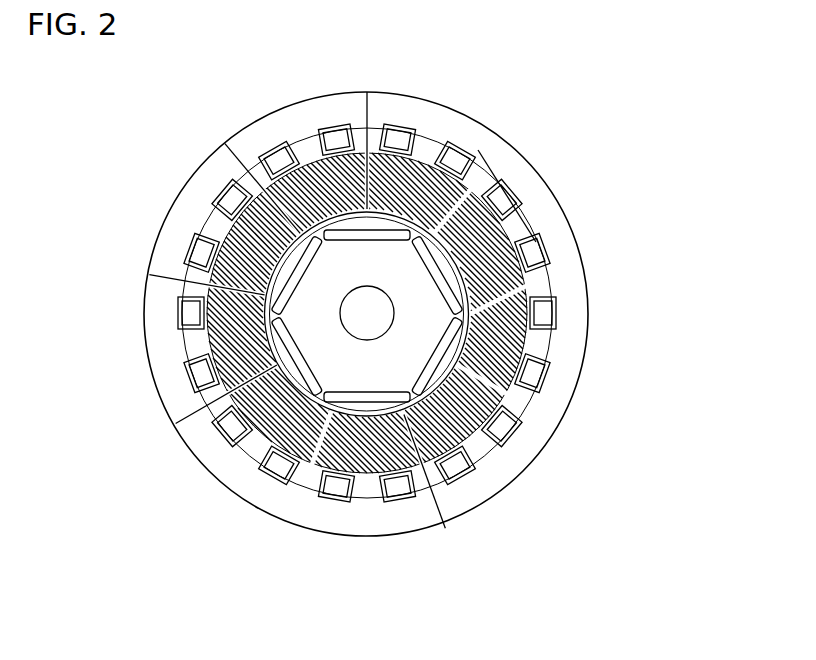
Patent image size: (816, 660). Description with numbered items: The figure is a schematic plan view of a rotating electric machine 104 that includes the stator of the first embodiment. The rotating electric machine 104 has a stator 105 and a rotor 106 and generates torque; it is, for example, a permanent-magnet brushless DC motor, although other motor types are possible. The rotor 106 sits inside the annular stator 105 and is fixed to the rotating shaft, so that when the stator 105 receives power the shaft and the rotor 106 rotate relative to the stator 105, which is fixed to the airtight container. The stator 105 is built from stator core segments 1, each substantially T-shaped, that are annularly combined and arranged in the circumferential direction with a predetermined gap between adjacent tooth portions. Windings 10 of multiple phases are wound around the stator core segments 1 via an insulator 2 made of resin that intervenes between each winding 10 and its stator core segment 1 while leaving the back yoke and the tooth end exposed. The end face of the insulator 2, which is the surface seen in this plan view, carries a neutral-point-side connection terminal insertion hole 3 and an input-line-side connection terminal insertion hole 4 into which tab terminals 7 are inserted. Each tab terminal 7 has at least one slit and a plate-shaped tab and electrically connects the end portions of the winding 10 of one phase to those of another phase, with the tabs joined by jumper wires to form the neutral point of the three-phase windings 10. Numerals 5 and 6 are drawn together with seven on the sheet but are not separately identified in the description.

The stator core segment 1 is at (377, 535).
The insulator 2 is at (391, 408).
The neutral-point-side connection terminal insertion hole 3 is at (330, 417).
The input-line-side connection terminal insertion hole 4 is at (404, 417).
The coil 5 is at (346, 474).
The coil 6 is at (397, 478).
The tab terminal 7 is at (367, 486).
The winding 10 is at (281, 462).
The rotating electric machine 104 is at (602, 185).
The stator 105 is at (546, 245).
The rotor 106 is at (427, 327).